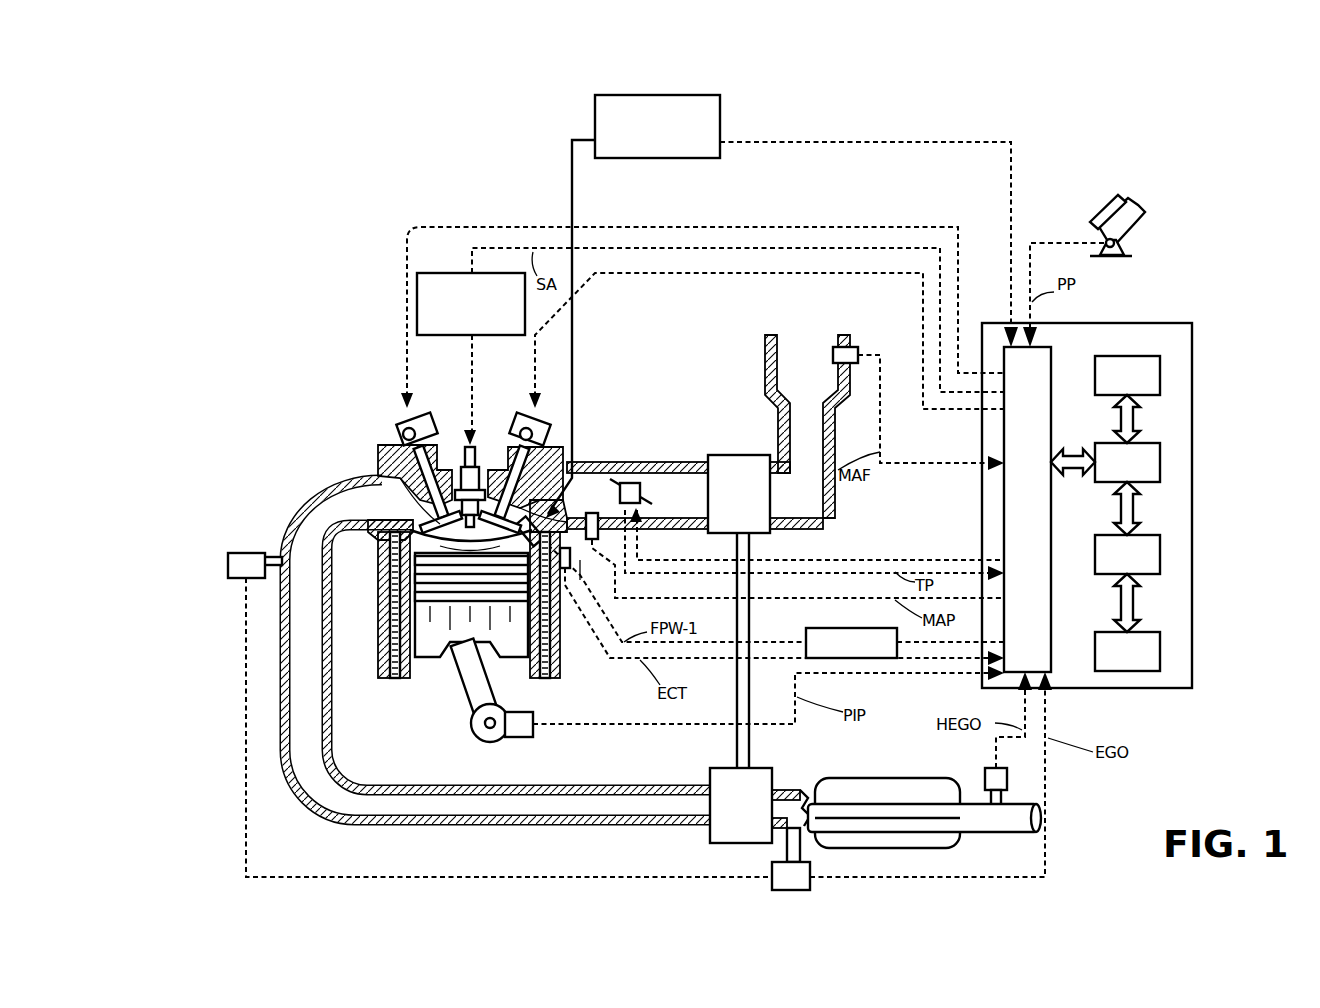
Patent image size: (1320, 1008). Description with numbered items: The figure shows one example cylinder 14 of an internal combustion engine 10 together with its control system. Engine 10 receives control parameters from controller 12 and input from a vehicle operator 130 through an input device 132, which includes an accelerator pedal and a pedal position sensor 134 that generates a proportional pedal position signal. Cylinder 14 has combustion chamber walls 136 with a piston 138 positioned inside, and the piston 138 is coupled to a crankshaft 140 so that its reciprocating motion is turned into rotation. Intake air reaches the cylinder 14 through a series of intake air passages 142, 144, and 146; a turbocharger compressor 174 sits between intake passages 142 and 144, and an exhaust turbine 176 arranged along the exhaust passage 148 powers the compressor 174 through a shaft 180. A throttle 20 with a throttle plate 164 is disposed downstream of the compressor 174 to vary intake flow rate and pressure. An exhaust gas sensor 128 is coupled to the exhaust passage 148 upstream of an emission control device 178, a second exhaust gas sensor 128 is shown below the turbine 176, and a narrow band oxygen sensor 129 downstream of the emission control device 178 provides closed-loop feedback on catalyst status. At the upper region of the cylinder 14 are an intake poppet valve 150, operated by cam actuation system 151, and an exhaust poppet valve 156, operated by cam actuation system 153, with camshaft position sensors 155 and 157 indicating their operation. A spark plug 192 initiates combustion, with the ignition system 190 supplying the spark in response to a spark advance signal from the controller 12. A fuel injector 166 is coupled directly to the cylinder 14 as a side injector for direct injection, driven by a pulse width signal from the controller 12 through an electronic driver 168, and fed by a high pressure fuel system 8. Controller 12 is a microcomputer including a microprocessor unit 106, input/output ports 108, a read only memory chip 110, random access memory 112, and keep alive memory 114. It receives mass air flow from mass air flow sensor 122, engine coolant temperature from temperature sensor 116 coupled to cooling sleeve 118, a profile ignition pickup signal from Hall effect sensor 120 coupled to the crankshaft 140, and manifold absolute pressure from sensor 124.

The high pressure fuel system 8 is at (720, 110).
The internal combustion engine 10 is at (222, 170).
The controller 12 is at (1192, 328).
The cylinder 14 is at (388, 555).
The throttle 20 is at (628, 478).
The microprocessor unit 106 is at (1162, 456).
The input/output ports 108 is at (1053, 357).
The read only memory chip 110 is at (1162, 372).
The random access memory 112 is at (1162, 553).
The keep alive memory 114 is at (1162, 650).
The temperature sensor 116 is at (576, 600).
The cooling sleeve 118 is at (566, 575).
The Hall effect sensor 120 is at (530, 740).
The mass air flow sensor 122 is at (850, 348).
The manifold pressure sensor 124 is at (615, 575).
The exhaust gas sensor 128 is at (228, 568).
The HEGO sensor 129 is at (1008, 781).
The vehicle operator 130 is at (1136, 208).
The input device 132 is at (1092, 222).
The pedal position sensor 134 is at (1128, 244).
The combustion chamber walls 136 is at (405, 680).
The piston 138 is at (455, 633).
The crankshaft 140 is at (478, 741).
The intake air passage 142 is at (807, 426).
The intake air passage 144 is at (695, 495).
The intake air passage 146 is at (561, 503).
The exhaust passage 148 is at (498, 650).
The intake poppet valve 150 is at (472, 525).
The cam actuation system 151 is at (522, 416).
The cam actuation system 153 is at (418, 418).
The camshaft position sensor 155 is at (560, 470).
The exhaust poppet valve 156 is at (400, 500).
The camshaft position sensor 157 is at (402, 452).
The throttle plate 164 is at (612, 482).
The fuel injector 166 is at (661, 569).
The electronic driver 168 is at (806, 630).
The compressor 174 is at (726, 455).
The exhaust turbine 176 is at (712, 830).
The emission control device 178 is at (925, 786).
The shaft 180 is at (750, 670).
The ignition system 190 is at (433, 273).
The spark plug 192 is at (458, 475).